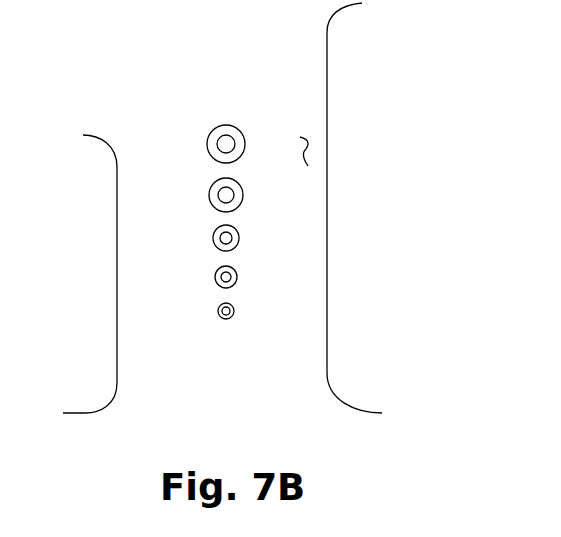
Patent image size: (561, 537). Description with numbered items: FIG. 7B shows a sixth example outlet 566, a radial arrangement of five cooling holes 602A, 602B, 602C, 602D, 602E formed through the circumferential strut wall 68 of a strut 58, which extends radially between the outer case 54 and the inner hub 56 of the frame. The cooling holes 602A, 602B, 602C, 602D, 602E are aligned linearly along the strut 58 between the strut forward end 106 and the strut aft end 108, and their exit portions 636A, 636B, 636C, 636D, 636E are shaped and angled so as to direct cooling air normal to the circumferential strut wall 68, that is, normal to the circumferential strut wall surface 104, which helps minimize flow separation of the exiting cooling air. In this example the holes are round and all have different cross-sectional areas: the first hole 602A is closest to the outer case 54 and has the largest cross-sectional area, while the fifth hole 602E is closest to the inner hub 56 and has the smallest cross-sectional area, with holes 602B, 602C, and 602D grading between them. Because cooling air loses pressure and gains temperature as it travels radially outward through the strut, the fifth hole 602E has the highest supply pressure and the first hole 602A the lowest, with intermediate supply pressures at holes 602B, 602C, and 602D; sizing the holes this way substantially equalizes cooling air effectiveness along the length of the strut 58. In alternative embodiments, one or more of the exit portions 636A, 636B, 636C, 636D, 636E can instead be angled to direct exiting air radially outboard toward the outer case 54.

The sixth example outlet 566 is at (234, 211).
The outer case 54 is at (236, 68).
The circumferential strut wall 68 is at (301, 99).
The inner hub 56 is at (239, 408).
The strut 58 is at (104, 291).
The strut forward end 106 is at (117, 334).
The strut aft end 108 is at (327, 275).
The circumferential strut wall surface 104 is at (307, 150).
The first exit portion 636A is at (208, 137).
The second exit portion 636B is at (209, 193).
The third exit portion 636C is at (213, 238).
The fourth exit portion 636D is at (216, 275).
The fifth exit portion 636E is at (217, 309).
The first cooling hole 602A is at (264, 133).
The second cooling hole 602B is at (259, 191).
The third cooling hole 602C is at (254, 237).
The fourth cooling hole 602D is at (255, 292).
The fifth cooling hole 602E is at (230, 335).